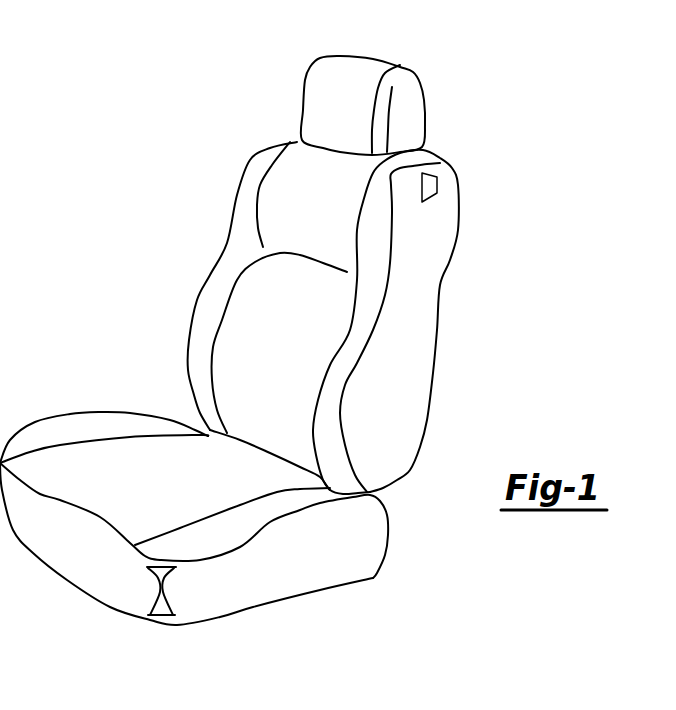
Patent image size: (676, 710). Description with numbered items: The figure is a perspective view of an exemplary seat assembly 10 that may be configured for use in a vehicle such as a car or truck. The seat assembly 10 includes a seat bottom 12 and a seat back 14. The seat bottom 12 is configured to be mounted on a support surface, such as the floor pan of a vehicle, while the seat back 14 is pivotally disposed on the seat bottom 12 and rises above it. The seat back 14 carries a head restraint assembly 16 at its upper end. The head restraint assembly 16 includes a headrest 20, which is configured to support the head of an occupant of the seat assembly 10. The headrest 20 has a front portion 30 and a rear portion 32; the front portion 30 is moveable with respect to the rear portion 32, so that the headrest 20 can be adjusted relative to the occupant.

The seat assembly 10 is at (249, 151).
The seat bottom 12 is at (123, 412).
The seat back 14 is at (235, 200).
The head restraint assembly 16 is at (421, 92).
The headrest 20 is at (332, 57).
The front portion 30 is at (317, 114).
The rear portion 32 is at (413, 135).